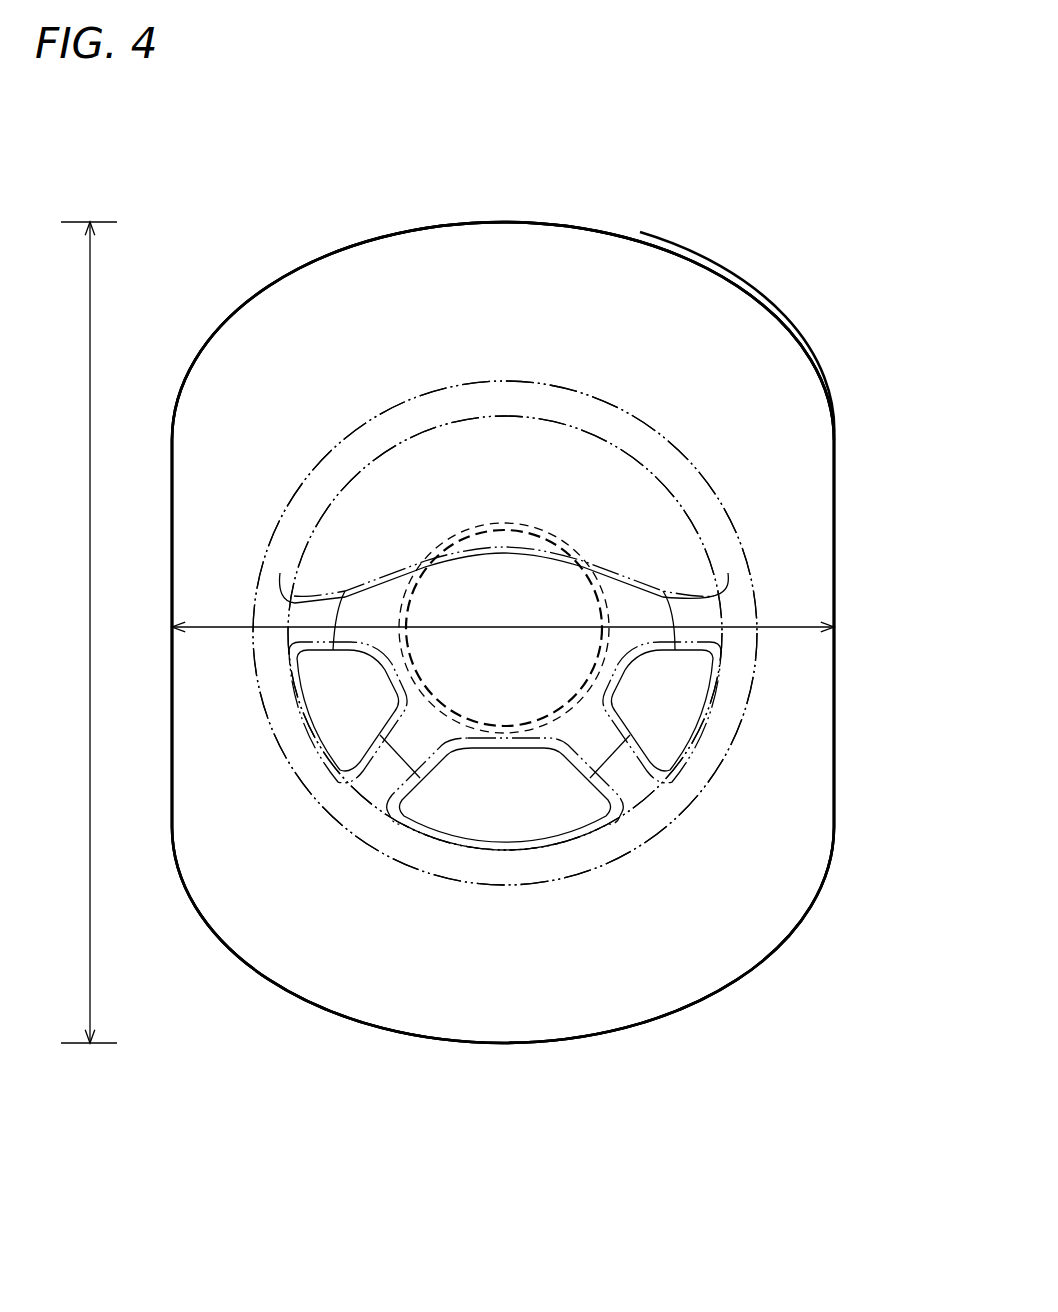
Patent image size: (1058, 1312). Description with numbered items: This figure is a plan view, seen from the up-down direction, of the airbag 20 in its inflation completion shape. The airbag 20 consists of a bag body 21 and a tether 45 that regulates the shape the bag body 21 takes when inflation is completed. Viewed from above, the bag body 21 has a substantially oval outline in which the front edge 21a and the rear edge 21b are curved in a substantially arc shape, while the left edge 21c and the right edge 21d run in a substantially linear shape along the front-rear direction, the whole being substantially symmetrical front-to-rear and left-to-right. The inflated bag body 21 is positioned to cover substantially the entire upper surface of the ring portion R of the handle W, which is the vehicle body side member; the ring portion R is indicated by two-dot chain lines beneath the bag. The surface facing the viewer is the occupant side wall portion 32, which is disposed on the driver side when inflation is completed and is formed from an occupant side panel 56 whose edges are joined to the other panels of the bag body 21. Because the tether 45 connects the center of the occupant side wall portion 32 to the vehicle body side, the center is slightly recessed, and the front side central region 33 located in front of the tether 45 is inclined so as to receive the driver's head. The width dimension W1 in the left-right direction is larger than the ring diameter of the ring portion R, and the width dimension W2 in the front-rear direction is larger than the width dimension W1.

The airbag 20 is at (697, 215).
The bag body 21 is at (497, 213).
The front edge 21a is at (562, 225).
The rear edge 21b is at (558, 1046).
The left edge 21c is at (171, 742).
The right edge 21d is at (838, 742).
The occupant side wall portion 32 is at (668, 342).
The front side central region 33 is at (478, 352).
The tether 45 is at (540, 527).
The occupant side panel 56 is at (762, 380).
The ring portion R is at (622, 848).
The handle W is at (592, 383).
The width dimension on the left-right direction side W1 is at (503, 608).
The width dimension on the front-rear direction side W2 is at (77, 632).